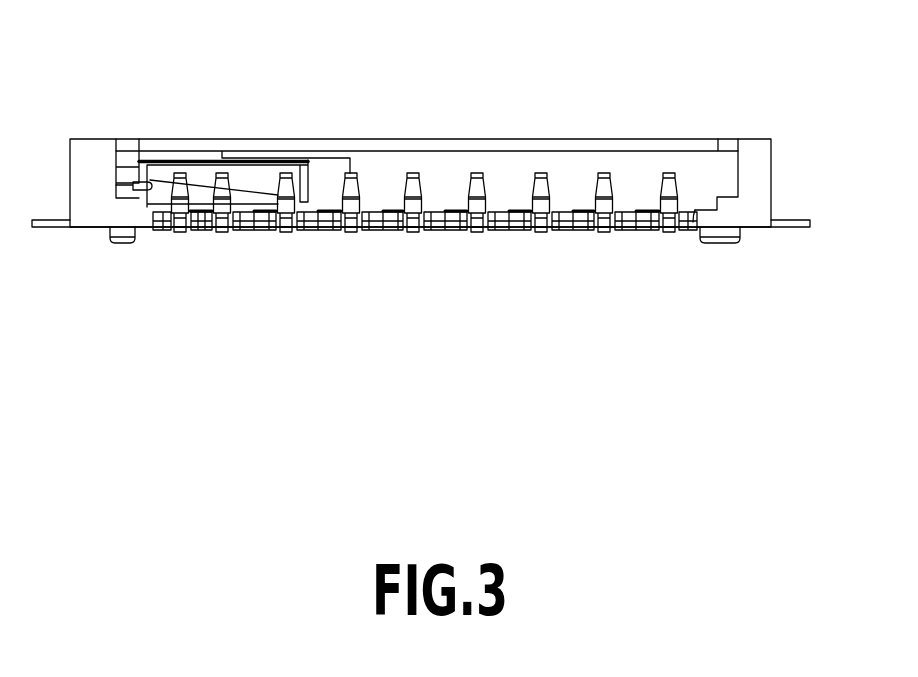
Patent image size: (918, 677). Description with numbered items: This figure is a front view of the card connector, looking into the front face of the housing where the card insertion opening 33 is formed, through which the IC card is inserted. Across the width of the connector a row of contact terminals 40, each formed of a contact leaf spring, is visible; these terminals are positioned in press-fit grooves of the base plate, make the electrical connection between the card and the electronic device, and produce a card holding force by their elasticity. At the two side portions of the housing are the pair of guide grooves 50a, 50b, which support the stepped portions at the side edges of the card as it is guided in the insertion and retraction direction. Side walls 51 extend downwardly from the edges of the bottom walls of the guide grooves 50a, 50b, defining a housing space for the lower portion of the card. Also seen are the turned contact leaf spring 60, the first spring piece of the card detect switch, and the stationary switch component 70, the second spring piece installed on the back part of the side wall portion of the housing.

The card insertion opening 33 is at (630, 170).
The contact terminals 40 is at (480, 180).
The guide groove 50a is at (727, 178).
The guide groove 50b is at (132, 155).
The side walls 51 is at (693, 215).
The contact leaf spring (first spring piece) 60 is at (253, 178).
The stationary switch component (second spring piece) 70 is at (132, 172).